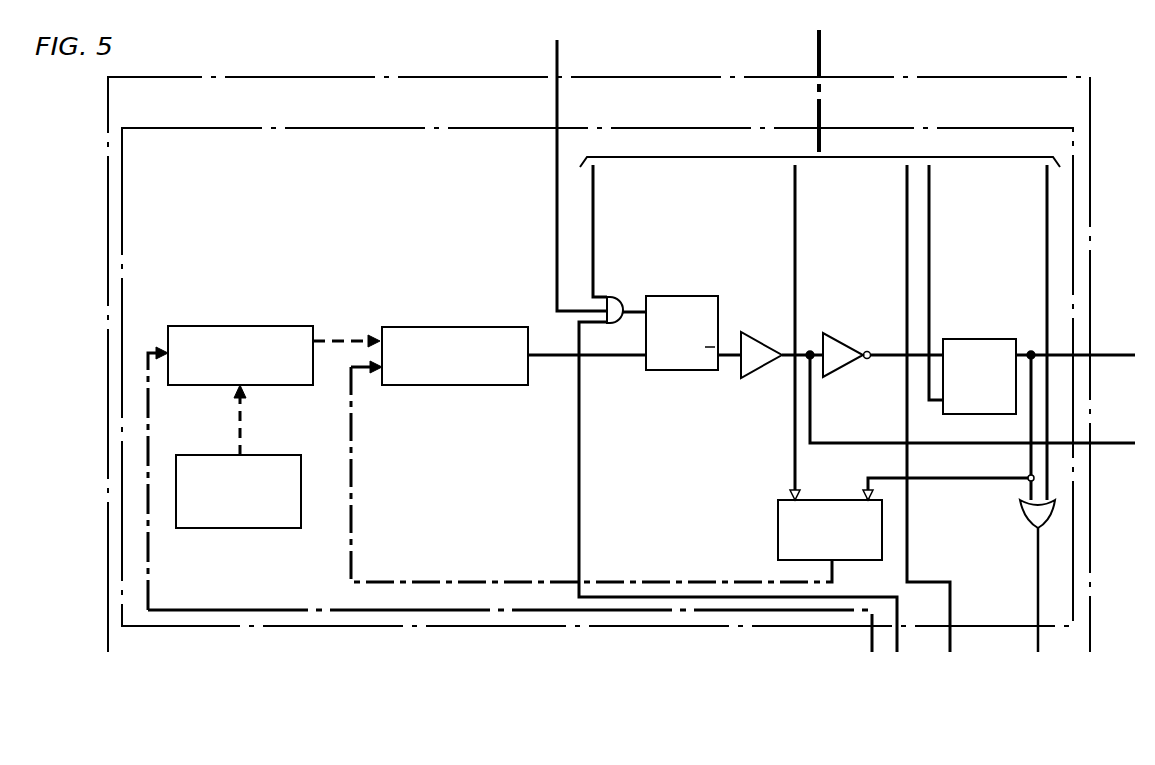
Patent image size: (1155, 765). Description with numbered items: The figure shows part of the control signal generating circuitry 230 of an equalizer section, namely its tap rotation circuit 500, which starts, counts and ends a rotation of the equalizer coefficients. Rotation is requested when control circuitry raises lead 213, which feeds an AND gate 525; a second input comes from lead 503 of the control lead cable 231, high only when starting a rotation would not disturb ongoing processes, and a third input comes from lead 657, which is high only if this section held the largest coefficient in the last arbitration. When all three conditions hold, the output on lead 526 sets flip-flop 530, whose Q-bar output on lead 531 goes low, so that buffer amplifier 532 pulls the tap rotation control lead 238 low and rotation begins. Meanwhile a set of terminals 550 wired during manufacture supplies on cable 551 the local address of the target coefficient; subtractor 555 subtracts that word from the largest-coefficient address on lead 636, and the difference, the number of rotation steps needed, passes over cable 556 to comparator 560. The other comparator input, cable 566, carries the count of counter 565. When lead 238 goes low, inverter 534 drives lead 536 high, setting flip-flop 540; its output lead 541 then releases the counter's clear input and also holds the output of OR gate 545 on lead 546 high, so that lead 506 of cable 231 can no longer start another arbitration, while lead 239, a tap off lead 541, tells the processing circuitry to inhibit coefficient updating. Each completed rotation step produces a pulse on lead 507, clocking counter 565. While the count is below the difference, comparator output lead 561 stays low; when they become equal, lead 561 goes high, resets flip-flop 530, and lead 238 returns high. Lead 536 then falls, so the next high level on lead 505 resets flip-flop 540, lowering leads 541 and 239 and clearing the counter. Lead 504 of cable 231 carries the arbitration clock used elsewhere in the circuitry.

The control signal generating circuitry 230 is at (167, 77).
The tap rotation circuit 500 is at (473, 128).
The lead 213 is at (555, 57).
The control lead cable 231 is at (818, 57).
The lead 503 is at (595, 187).
The lead 504 is at (909, 212).
The lead 505 is at (931, 187).
The lead 506 is at (1045, 254).
The lead 507 is at (797, 187).
The AND gate 525 is at (616, 297).
The lead 526 is at (627, 315).
The flip-flop 530 is at (670, 296).
The lead 531 is at (727, 358).
The buffer amplifier 532 is at (752, 339).
The inverter 534 is at (851, 342).
The lead 536 is at (893, 358).
The flip-flop 540 is at (967, 339).
The lead 541 is at (1030, 432).
The OR gate 545 is at (1020, 510).
The lead 546 is at (1037, 640).
The set of terminals 550 is at (190, 455).
The cable 551 is at (242, 410).
The subtractor 555 is at (236, 326).
The cable 556 is at (330, 341).
The comparator 560 is at (454, 327).
The lead 561 is at (548, 358).
The counter 565 is at (778, 522).
The cable 566 is at (352, 416).
The lead 636 is at (870, 640).
The lead 657 is at (899, 640).
The tap rotation control lead 238 is at (1099, 443).
The lead 239 is at (1099, 355).